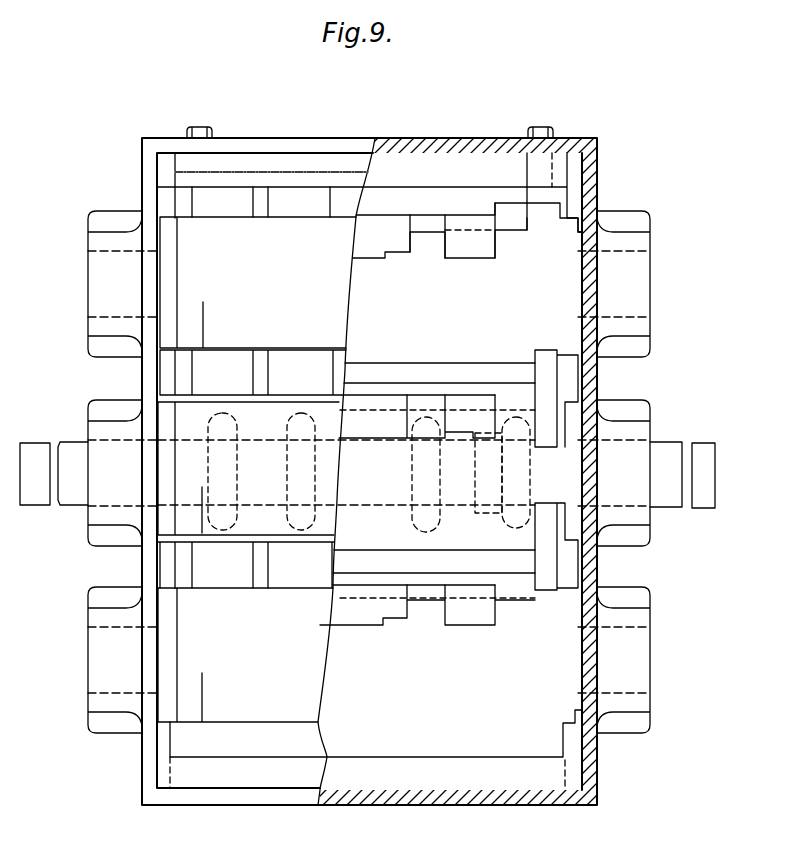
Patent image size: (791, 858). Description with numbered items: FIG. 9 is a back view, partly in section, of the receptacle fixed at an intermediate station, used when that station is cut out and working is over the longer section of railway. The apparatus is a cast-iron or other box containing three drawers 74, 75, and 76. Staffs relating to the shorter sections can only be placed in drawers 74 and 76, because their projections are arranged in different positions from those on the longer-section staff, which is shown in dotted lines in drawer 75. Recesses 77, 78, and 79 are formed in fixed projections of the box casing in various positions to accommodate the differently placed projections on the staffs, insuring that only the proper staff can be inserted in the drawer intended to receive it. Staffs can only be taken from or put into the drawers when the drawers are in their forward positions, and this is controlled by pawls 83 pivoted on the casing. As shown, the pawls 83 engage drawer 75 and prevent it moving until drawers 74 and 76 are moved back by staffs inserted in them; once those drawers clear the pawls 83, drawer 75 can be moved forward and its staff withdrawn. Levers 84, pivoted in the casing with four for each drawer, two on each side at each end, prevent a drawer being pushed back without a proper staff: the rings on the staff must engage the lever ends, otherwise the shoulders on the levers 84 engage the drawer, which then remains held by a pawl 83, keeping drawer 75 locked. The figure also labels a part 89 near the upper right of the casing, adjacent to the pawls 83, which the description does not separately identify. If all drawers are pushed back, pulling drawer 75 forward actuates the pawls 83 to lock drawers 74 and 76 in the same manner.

The drawer 74 is at (170, 243).
The drawer 75 is at (165, 425).
The drawer 76 is at (170, 657).
The recess 77 is at (395, 253).
The recess 78 is at (490, 435).
The recess 79 is at (390, 620).
The pawls 83 is at (540, 543).
The levers 84 is at (326, 387).
The upper bearing 89 is at (540, 432).